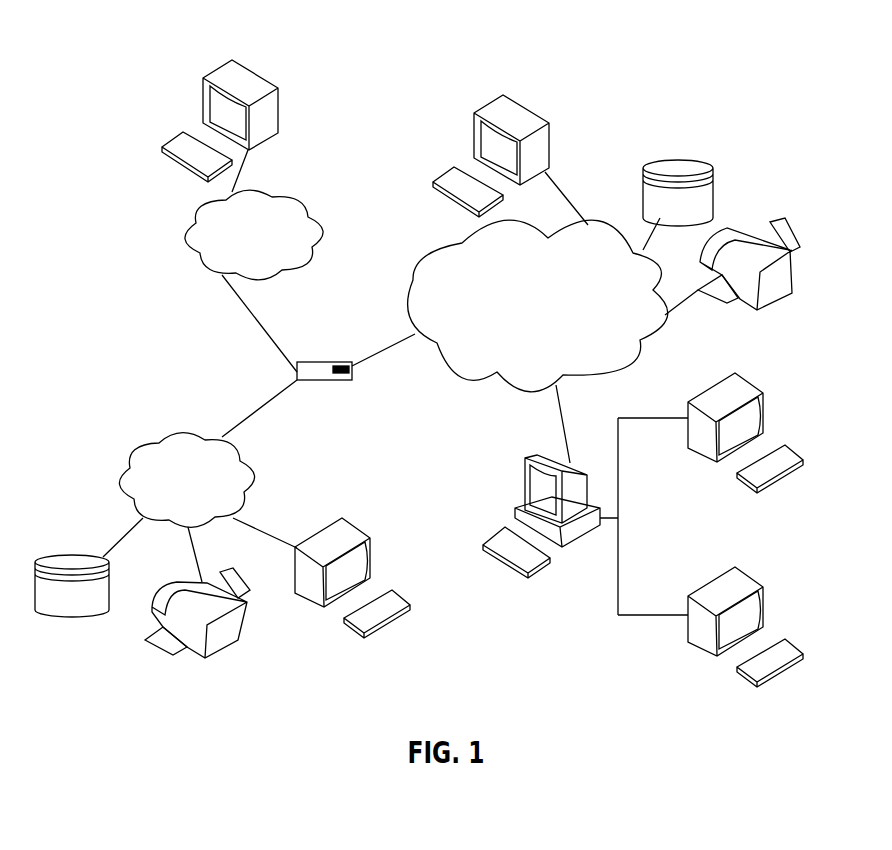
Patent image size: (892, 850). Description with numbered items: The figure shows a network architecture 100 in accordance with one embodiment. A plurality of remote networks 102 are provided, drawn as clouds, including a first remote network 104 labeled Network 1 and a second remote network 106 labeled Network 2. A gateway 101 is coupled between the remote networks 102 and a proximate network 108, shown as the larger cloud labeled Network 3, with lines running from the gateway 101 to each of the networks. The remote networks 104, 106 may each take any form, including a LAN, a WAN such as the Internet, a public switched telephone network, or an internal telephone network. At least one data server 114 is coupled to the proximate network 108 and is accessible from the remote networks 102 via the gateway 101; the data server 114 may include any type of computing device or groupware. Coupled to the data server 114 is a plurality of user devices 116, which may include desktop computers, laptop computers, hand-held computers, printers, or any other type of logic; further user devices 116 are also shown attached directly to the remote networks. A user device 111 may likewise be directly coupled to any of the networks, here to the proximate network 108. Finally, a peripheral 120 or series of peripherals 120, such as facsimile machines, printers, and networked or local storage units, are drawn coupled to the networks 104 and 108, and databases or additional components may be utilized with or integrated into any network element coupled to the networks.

The architecture 100 is at (151, 47).
The gateway 101 is at (308, 362).
The remote networks 102 is at (176, 286).
The first remote network 104 is at (127, 457).
The second remote network 106 is at (310, 212).
The proximate network 108 is at (630, 364).
The user device 111 is at (548, 128).
The data server 114 is at (525, 477).
The user devices 116 is at (278, 96).
The peripheral 120 is at (713, 171).